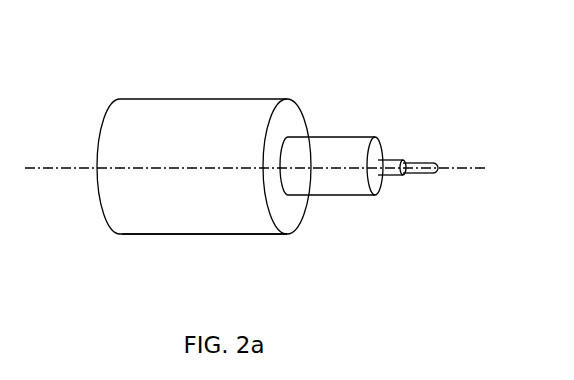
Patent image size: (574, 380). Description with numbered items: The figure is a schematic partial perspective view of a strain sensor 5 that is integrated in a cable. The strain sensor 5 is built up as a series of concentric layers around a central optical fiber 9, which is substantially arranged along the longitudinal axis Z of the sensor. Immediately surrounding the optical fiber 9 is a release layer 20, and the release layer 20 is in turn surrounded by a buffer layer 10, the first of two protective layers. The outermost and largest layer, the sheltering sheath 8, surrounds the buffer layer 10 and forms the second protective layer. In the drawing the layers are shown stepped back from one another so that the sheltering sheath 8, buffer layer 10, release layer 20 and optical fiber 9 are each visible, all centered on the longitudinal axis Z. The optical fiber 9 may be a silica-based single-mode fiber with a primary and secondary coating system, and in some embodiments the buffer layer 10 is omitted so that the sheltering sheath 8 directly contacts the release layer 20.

The strain sensor 5 is at (156, 244).
The sheltering sheath 8 is at (217, 138).
The optical fiber 9 is at (413, 158).
The buffer layer 10 is at (327, 146).
The release layer 20 is at (387, 158).
The longitudinal axis Z is at (465, 166).